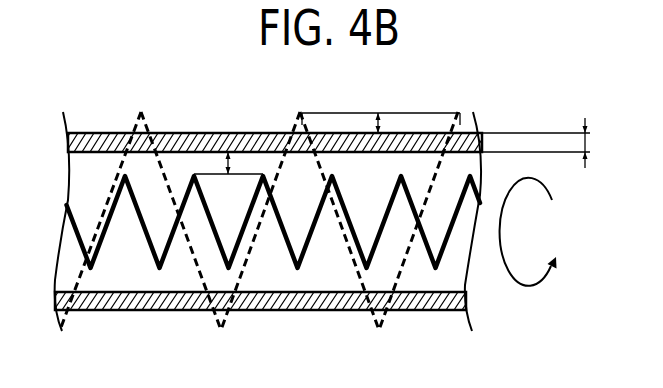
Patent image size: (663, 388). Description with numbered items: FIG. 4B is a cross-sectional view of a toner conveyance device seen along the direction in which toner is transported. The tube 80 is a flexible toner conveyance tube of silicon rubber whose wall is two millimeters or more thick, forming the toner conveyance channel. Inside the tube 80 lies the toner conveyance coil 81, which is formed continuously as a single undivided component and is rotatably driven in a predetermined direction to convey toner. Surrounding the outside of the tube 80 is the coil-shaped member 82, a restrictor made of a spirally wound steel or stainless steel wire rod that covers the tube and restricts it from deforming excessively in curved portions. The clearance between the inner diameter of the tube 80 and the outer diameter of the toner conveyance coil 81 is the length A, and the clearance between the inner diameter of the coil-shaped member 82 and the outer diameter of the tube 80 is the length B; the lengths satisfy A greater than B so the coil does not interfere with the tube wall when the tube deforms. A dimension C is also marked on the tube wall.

The tube 80 is at (175, 133).
The toner conveyance coil 81 is at (147, 241).
The coil-shaped member 82 is at (132, 114).
The length A is at (226, 165).
The length B is at (377, 127).
The wall thickness C is at (543, 202).